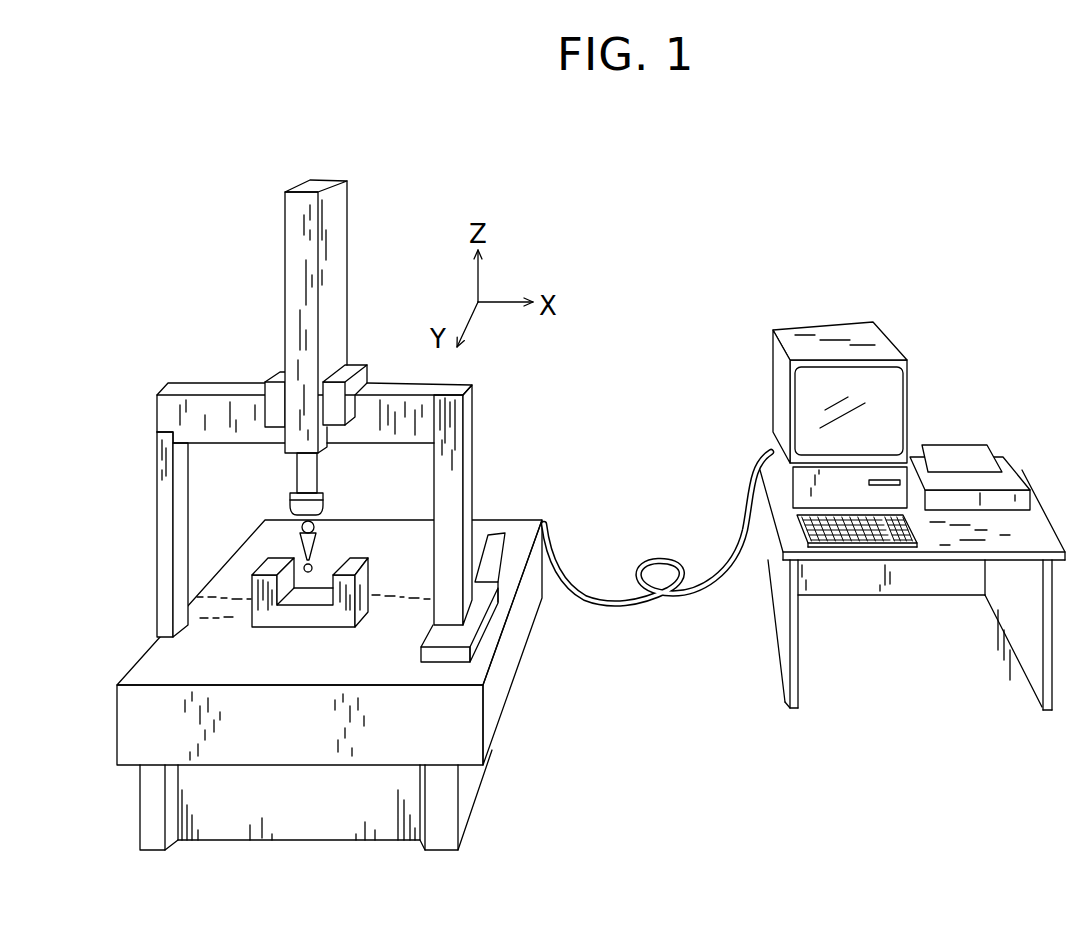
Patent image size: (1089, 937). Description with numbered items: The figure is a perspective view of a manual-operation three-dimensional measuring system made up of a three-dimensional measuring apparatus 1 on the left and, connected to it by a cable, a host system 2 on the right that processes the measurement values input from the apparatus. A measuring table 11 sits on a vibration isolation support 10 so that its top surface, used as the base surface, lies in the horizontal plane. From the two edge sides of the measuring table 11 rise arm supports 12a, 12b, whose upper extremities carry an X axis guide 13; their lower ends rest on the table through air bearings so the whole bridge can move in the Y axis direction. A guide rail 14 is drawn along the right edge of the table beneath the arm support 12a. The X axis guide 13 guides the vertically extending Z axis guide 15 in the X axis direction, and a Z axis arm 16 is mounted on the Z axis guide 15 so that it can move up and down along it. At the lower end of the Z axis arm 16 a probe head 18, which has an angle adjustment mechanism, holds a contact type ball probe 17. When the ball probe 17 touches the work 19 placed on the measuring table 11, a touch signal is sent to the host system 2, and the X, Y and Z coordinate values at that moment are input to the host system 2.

The three-dimensional measuring apparatus 1 is at (382, 205).
The host system 2 is at (955, 297).
The vibration isolation support 10 is at (303, 833).
The measuring table 11 is at (132, 731).
The arm support 12a is at (450, 422).
The arm support 12b is at (180, 466).
The X axis guide 13 is at (222, 382).
The Y-axis guide rail 14 is at (495, 543).
The Z axis guide 15 is at (300, 240).
The Z axis arm 16 is at (318, 475).
The ball probe 17 is at (313, 558).
The probe head 18 is at (296, 532).
The work 19 is at (307, 620).